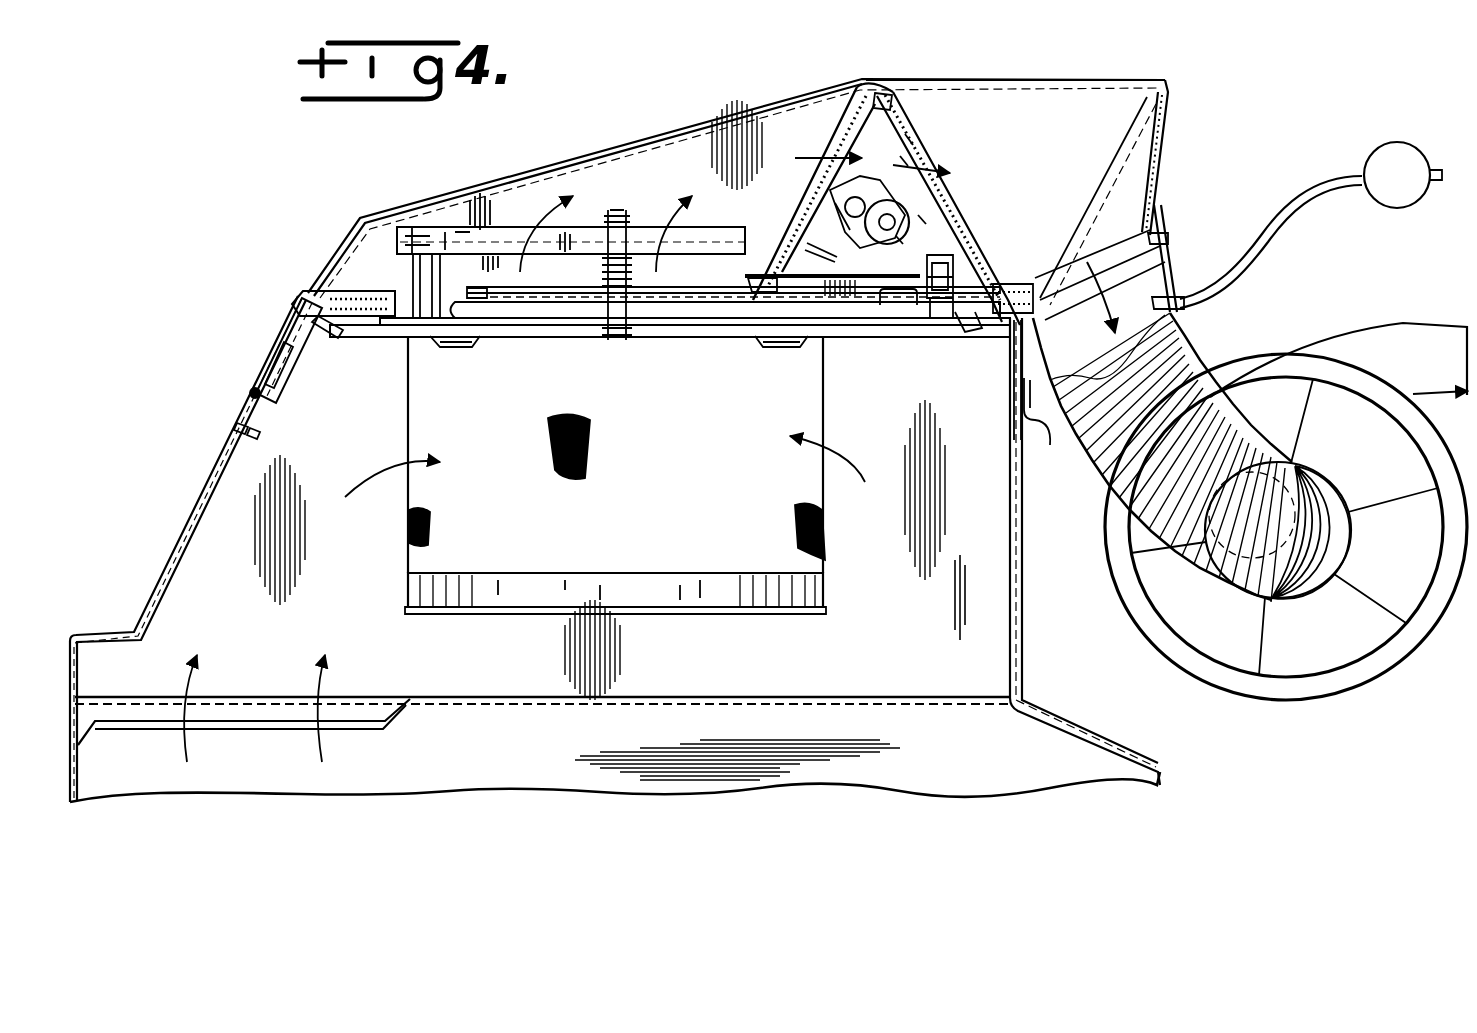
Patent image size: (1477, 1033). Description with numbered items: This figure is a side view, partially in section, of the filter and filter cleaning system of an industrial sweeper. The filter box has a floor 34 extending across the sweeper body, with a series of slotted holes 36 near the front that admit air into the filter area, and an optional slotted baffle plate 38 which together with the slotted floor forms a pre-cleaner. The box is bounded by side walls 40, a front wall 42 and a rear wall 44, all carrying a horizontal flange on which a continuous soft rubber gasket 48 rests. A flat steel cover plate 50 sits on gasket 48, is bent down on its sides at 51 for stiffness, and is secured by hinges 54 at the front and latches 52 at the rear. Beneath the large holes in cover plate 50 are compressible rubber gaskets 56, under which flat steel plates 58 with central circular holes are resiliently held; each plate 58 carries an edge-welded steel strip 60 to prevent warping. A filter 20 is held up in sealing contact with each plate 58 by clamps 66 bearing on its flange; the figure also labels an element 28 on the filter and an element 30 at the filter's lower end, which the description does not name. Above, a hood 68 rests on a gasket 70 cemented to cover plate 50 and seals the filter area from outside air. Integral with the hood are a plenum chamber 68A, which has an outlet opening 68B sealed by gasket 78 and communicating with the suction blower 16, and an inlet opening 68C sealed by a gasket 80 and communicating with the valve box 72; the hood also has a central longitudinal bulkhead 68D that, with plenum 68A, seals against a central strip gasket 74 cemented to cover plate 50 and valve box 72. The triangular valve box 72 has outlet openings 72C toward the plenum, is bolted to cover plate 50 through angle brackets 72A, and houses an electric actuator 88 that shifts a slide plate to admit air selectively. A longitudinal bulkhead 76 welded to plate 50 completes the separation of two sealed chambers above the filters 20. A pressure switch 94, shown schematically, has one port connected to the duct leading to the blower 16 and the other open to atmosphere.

The suction blower 16 is at (1422, 328).
The filter 20 is at (830, 522).
The air inlet opening 28 is at (406, 538).
The tray 30 is at (668, 610).
The floor 34 is at (640, 704).
The slotted holes 36 is at (262, 700).
The slotted baffle plate 38 is at (258, 732).
The side walls 40 is at (877, 770).
The front wall 42 is at (196, 531).
The rear wall 44 is at (1024, 606).
The soft rubber gasket 48 is at (296, 313).
The cover plate 50 is at (340, 338).
The bent-down side 51 is at (270, 350).
The latch 52 is at (1030, 412).
The hinge 54 is at (250, 393).
The compressible rubber gasket 56 is at (360, 337).
The flat steel plate 58 is at (565, 320).
The steel strip 60 is at (396, 294).
The clamp 66 is at (458, 345).
The hood 68 is at (640, 143).
The plenum chamber 68A is at (1078, 105).
The outlet opening 68B is at (1162, 150).
The inlet opening 68C is at (912, 138).
The central longitudinal bulkhead 68D is at (722, 118).
The gasket 70 is at (306, 291).
The valve box 72 is at (876, 270).
The angle bracket 72A is at (903, 240).
The outlet opening 72C is at (905, 160).
The central strip gasket 74 is at (345, 292).
The longitudinal bulkhead 76 is at (760, 272).
The gasket 78 is at (1165, 236).
The gasket 80 is at (894, 110).
The electric actuator 88 is at (922, 218).
The pressure switch 94 is at (1397, 208).